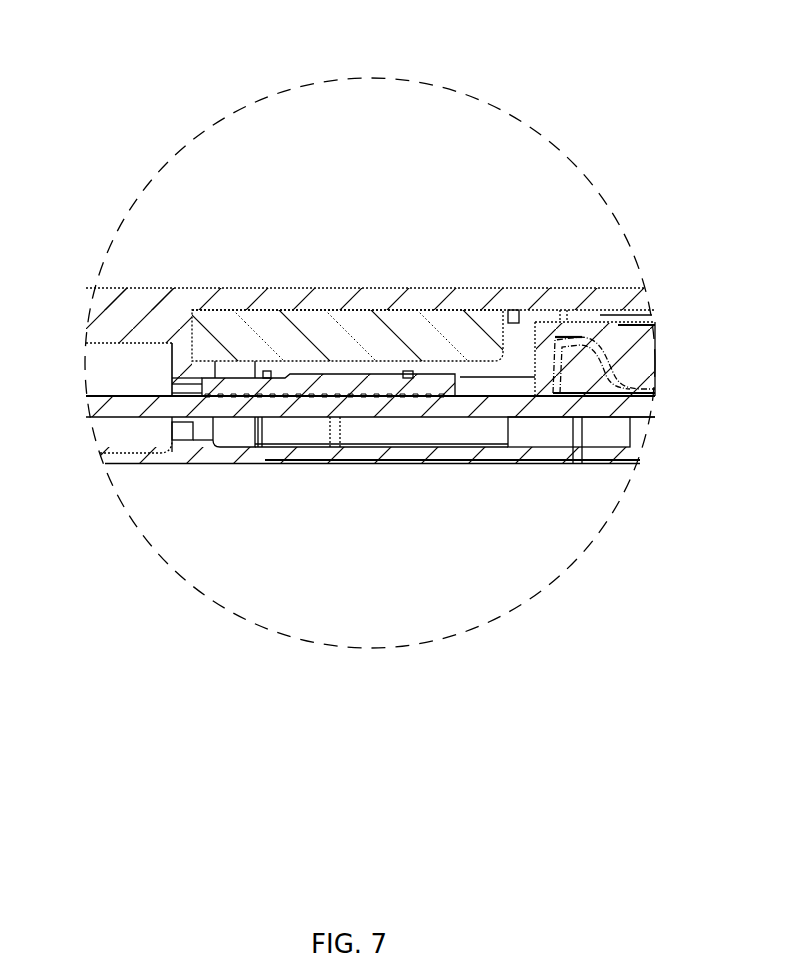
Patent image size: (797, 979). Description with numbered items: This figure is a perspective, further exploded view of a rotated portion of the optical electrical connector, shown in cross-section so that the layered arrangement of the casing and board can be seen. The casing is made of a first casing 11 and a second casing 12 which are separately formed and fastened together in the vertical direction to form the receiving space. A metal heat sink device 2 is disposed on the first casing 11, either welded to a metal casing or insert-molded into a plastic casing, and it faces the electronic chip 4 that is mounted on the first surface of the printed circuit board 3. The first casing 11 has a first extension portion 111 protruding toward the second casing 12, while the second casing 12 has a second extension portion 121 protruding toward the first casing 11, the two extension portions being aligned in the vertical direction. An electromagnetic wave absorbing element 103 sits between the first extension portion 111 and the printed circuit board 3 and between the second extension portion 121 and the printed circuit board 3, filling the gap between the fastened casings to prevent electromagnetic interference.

The heat sink device 2 is at (410, 330).
The first casing 11 is at (571, 288).
The first extension portion 111 is at (180, 357).
The electromagnetic wave absorbing element 103 is at (177, 386).
The second extension portion 121 is at (200, 445).
The printed circuit board 3 is at (402, 408).
The electronic chip 4 is at (427, 385).
The second casing 12 is at (600, 455).